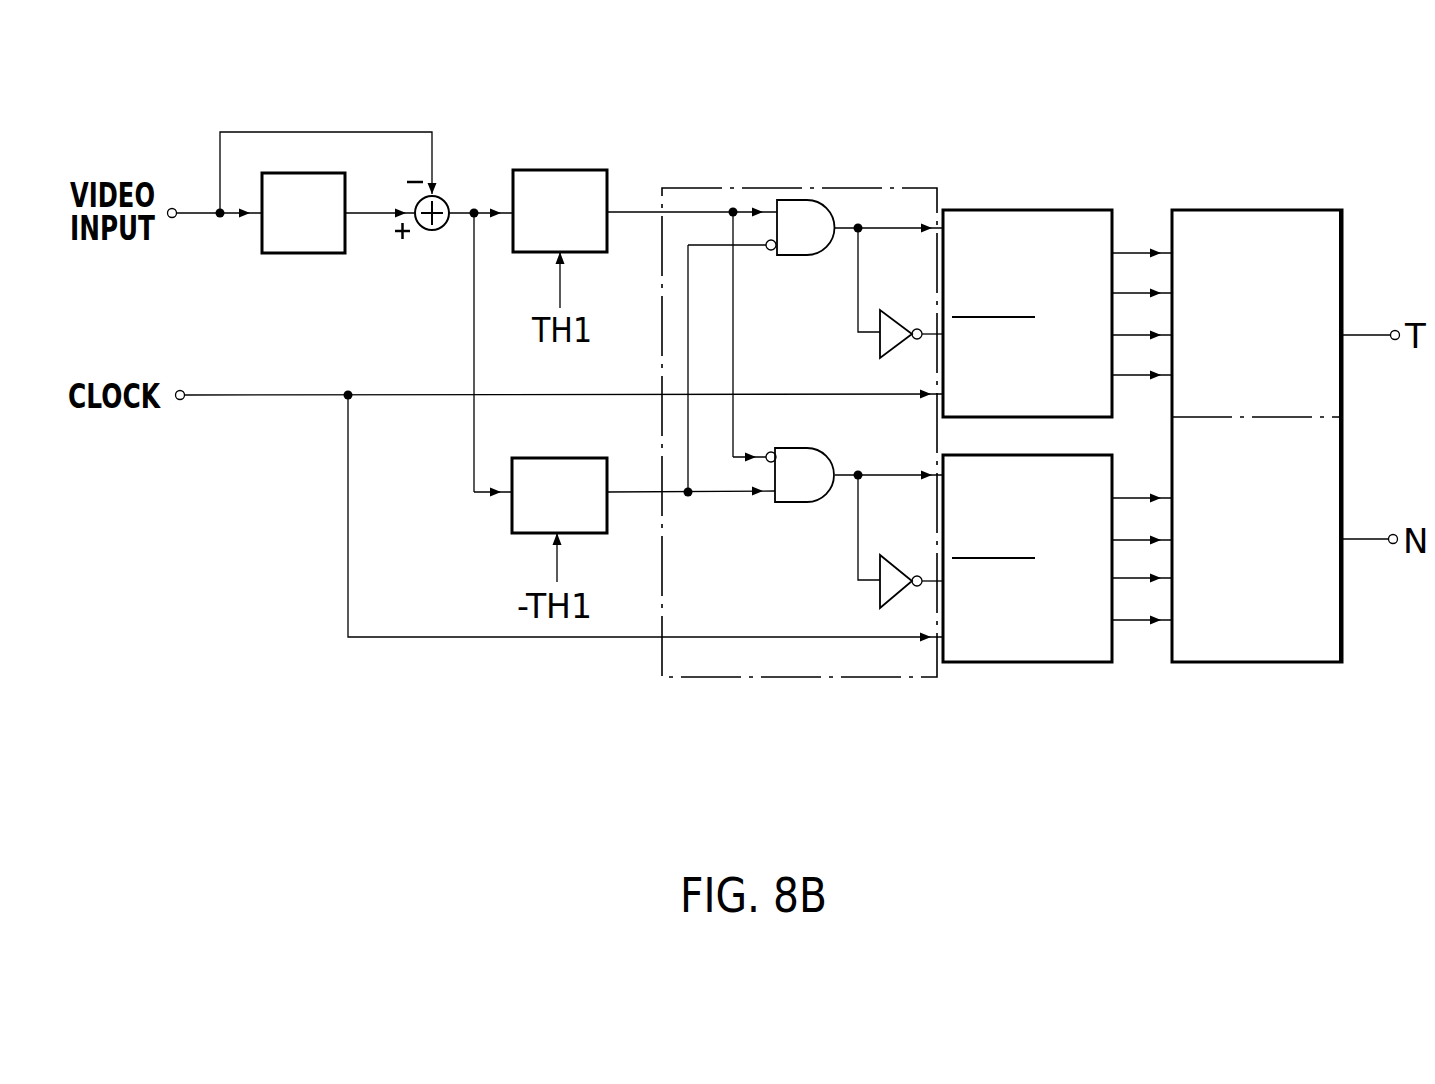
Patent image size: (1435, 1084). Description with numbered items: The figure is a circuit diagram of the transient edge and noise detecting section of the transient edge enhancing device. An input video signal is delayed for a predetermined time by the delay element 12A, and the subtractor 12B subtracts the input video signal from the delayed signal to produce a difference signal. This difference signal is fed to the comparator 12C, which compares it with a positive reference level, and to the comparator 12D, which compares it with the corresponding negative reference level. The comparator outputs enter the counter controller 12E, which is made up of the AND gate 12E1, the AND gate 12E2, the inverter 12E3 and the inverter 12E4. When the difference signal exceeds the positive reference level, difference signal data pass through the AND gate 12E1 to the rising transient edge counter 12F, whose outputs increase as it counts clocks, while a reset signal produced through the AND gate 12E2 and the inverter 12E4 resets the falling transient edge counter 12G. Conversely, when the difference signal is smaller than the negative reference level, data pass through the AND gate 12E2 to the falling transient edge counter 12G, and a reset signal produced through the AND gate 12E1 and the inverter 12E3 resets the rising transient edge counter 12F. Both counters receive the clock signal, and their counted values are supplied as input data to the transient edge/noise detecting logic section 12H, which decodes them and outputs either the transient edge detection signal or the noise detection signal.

The delay element 12A is at (305, 253).
The subtractor 12B is at (438, 230).
The comparator 12C is at (568, 170).
The comparator 12D is at (548, 458).
The counter controller 12E is at (800, 188).
The AND gate 12E1 is at (796, 255).
The AND gate 12E2 is at (800, 448).
The inverter 12E3 is at (880, 342).
The inverter 12E4 is at (880, 590).
The rising transient edge counter 12F is at (1010, 210).
The falling transient edge counter 12G is at (1055, 662).
The transient edge/noise detecting logic section 12H is at (1225, 210).